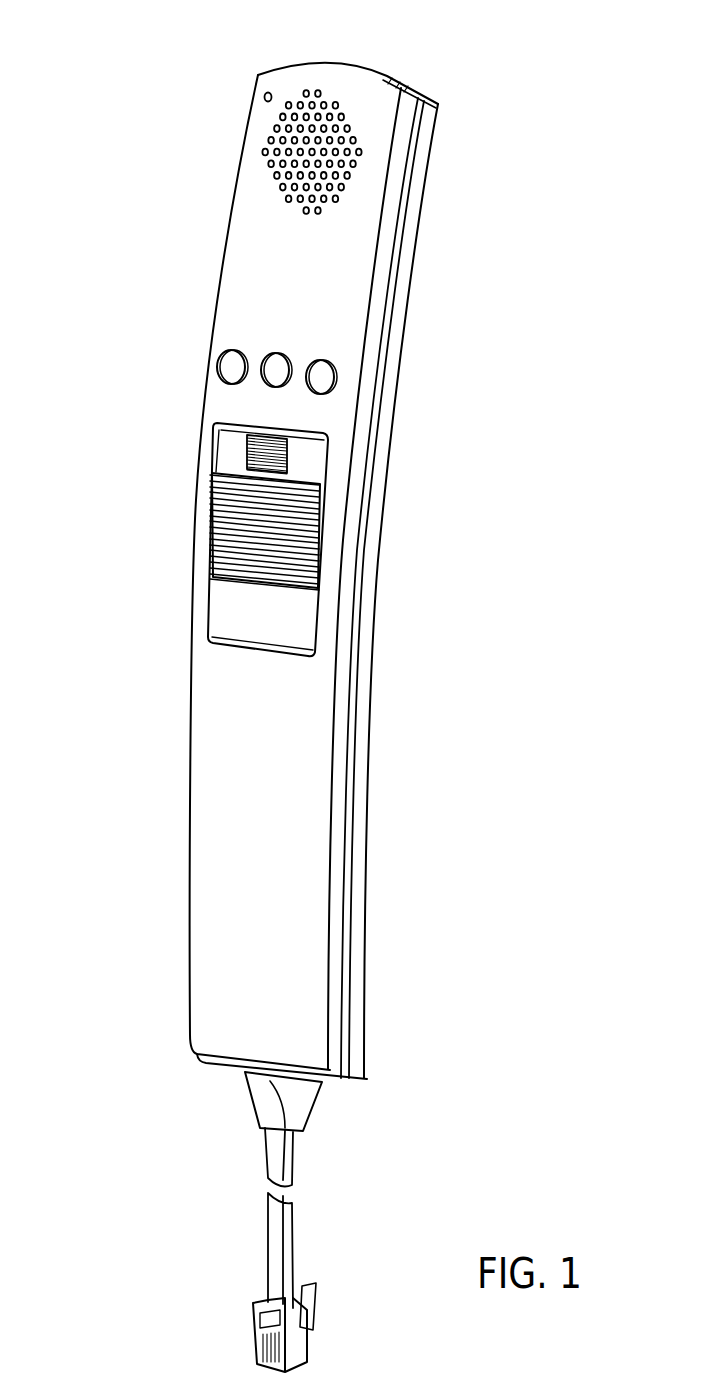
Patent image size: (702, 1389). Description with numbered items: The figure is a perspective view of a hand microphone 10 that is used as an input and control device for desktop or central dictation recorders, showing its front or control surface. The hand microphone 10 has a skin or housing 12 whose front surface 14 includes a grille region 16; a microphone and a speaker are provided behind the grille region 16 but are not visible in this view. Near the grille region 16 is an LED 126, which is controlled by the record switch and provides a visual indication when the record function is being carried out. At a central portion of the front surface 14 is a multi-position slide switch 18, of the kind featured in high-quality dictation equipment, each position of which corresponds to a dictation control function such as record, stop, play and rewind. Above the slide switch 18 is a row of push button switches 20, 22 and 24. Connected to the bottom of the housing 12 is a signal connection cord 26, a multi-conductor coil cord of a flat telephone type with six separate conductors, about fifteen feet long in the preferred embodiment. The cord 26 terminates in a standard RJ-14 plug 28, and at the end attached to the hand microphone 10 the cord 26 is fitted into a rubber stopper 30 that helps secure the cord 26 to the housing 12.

The hand microphone 10 is at (90, 103).
The housing 12 is at (347, 304).
The front surface 14 is at (258, 897).
The grille region 16 is at (371, 103).
The slide switch 18 is at (205, 402).
The push button switch 20 is at (220, 351).
The push button switch 22 is at (266, 353).
The push button switch 24 is at (340, 372).
The signal connection cord 26 is at (246, 1242).
The plug 28 is at (312, 1350).
The rubber stopper 30 is at (310, 1104).
The LED 126 is at (268, 90).